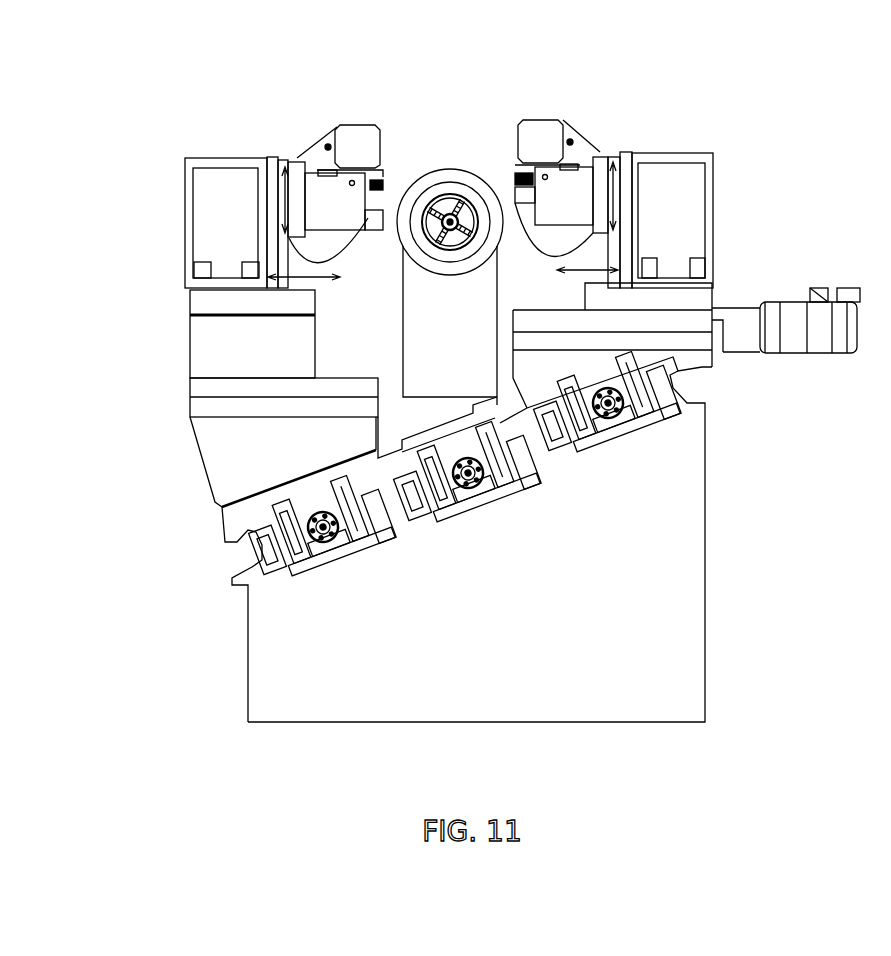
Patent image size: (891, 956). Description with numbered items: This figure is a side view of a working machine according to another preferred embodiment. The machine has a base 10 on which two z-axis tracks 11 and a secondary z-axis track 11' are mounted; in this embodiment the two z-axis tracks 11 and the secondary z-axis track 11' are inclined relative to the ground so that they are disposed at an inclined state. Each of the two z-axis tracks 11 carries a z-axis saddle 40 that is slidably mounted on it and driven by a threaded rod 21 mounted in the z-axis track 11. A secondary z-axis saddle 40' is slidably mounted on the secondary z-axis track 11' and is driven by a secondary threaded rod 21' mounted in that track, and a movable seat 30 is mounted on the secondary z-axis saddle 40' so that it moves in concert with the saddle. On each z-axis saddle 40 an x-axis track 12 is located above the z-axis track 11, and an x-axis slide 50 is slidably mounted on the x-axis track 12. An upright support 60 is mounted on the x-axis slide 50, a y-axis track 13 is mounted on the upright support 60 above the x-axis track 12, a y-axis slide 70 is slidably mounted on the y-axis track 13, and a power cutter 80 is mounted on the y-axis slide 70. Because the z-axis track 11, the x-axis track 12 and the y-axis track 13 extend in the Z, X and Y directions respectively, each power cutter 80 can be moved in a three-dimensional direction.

The base 10 is at (685, 628).
The z-axis track 11 is at (440, 475).
The secondary z-axis track 11' is at (463, 484).
The x-axis track 12 is at (208, 317).
The y-axis track 13 is at (285, 158).
The threaded rod 21 is at (462, 498).
The secondary threaded rod 21' is at (464, 501).
The movable seat 30 is at (444, 182).
The z-axis saddle 40 is at (485, 397).
The secondary z-axis saddle 40' is at (422, 352).
The x-axis slide 50 is at (202, 302).
The upright support 60 is at (268, 182).
The y-axis slide 70 is at (298, 213).
The power cutter 80 is at (373, 145).